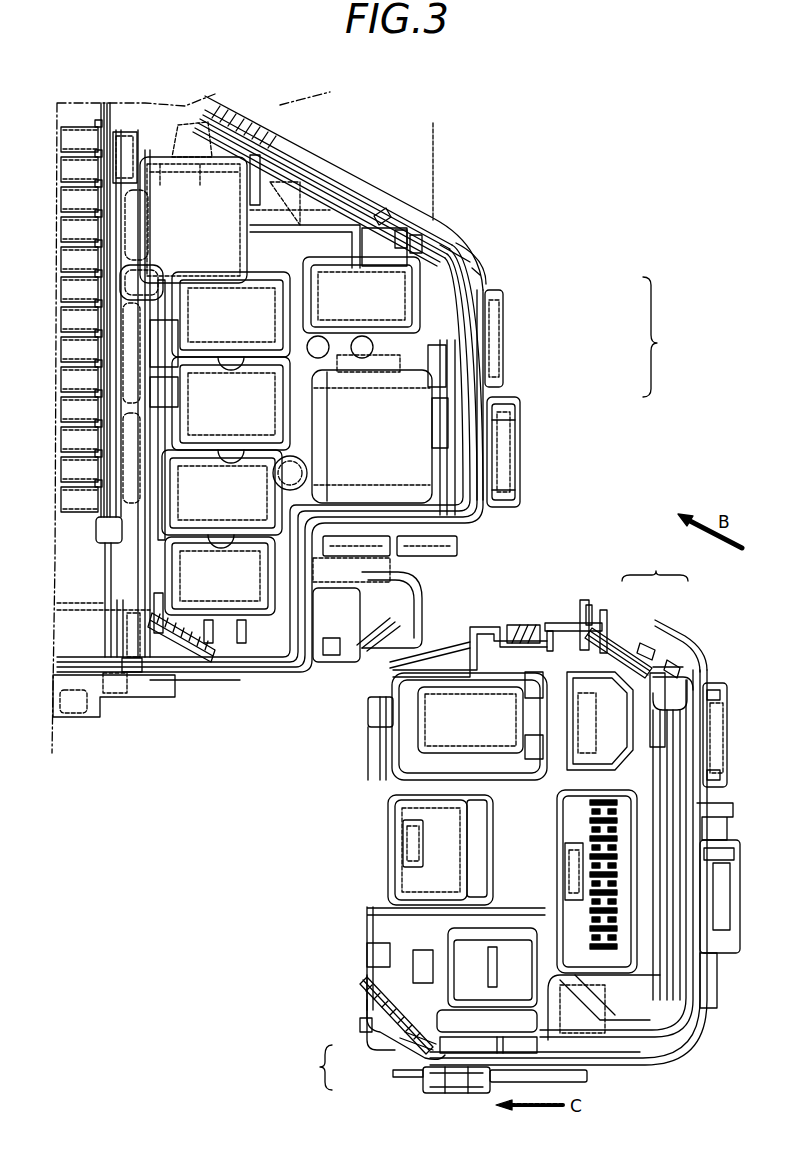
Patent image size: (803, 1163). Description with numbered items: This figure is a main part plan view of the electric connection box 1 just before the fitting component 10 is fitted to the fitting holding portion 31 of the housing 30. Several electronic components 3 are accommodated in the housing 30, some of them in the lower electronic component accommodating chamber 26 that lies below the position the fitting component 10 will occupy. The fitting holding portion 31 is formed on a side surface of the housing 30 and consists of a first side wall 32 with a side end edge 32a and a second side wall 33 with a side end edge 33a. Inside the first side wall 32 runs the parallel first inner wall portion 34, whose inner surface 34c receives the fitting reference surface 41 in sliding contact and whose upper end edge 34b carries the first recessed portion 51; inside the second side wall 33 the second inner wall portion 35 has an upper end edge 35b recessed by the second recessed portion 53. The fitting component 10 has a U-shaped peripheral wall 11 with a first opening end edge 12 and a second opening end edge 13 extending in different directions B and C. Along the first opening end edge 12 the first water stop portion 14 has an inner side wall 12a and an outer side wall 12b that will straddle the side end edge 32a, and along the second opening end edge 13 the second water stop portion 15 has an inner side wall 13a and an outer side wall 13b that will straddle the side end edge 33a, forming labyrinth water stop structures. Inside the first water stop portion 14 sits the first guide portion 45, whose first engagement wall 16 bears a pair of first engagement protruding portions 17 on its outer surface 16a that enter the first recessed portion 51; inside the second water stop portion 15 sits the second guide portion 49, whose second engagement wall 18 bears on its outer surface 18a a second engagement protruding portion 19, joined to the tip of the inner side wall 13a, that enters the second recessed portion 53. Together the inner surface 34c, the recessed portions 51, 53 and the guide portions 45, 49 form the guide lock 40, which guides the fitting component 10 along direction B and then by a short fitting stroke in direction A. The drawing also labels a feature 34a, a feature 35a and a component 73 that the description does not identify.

The electric connection box 1 is at (495, 137).
The electronic component 3 is at (400, 473).
The fitting component 10 is at (358, 880).
The peripheral wall 11 is at (703, 1012).
The first opening end edge 12 is at (676, 627).
The inner side wall 12a is at (640, 640).
The outer side wall 12b is at (663, 625).
The second opening end edge 13 is at (453, 1093).
The inner side wall 13a is at (400, 1040).
The outer side wall 13b is at (393, 1074).
The first water stop portion 14 is at (655, 562).
The second water stop portion 15 is at (316, 1067).
The first engagement wall 16 is at (603, 648).
The outer surface 16a is at (567, 622).
The first engagement protruding portion 17 is at (590, 608).
The second engagement wall 18 is at (383, 985).
The outer surface 18a is at (385, 1008).
The second engagement protruding portion 19 is at (367, 1018).
The electronic component accommodating chamber 26 is at (215, 208).
The housing 30 is at (260, 690).
The fitting holding portion 31 is at (300, 357).
The first side wall 32 is at (460, 248).
The side end edge 32a is at (478, 265).
The second side wall 33 is at (173, 672).
The side end edge 33a is at (203, 670).
The first inner wall portion 34 is at (440, 250).
The corner wall 34a is at (485, 275).
The upper end edge 34b is at (343, 227).
The inner surface 34c is at (405, 278).
The second inner wall portion 35 is at (193, 647).
The partition rib 35a is at (213, 670).
The upper end edge 35b is at (191, 615).
The guide lock 40 is at (662, 337).
The fitting reference surface 41 is at (618, 635).
The first guide portion 45 is at (612, 592).
The second guide portion 49 is at (245, 1010).
The first recessed portion 51 is at (378, 213).
The second recessed portion 53 is at (133, 660).
The connector 73 is at (520, 455).